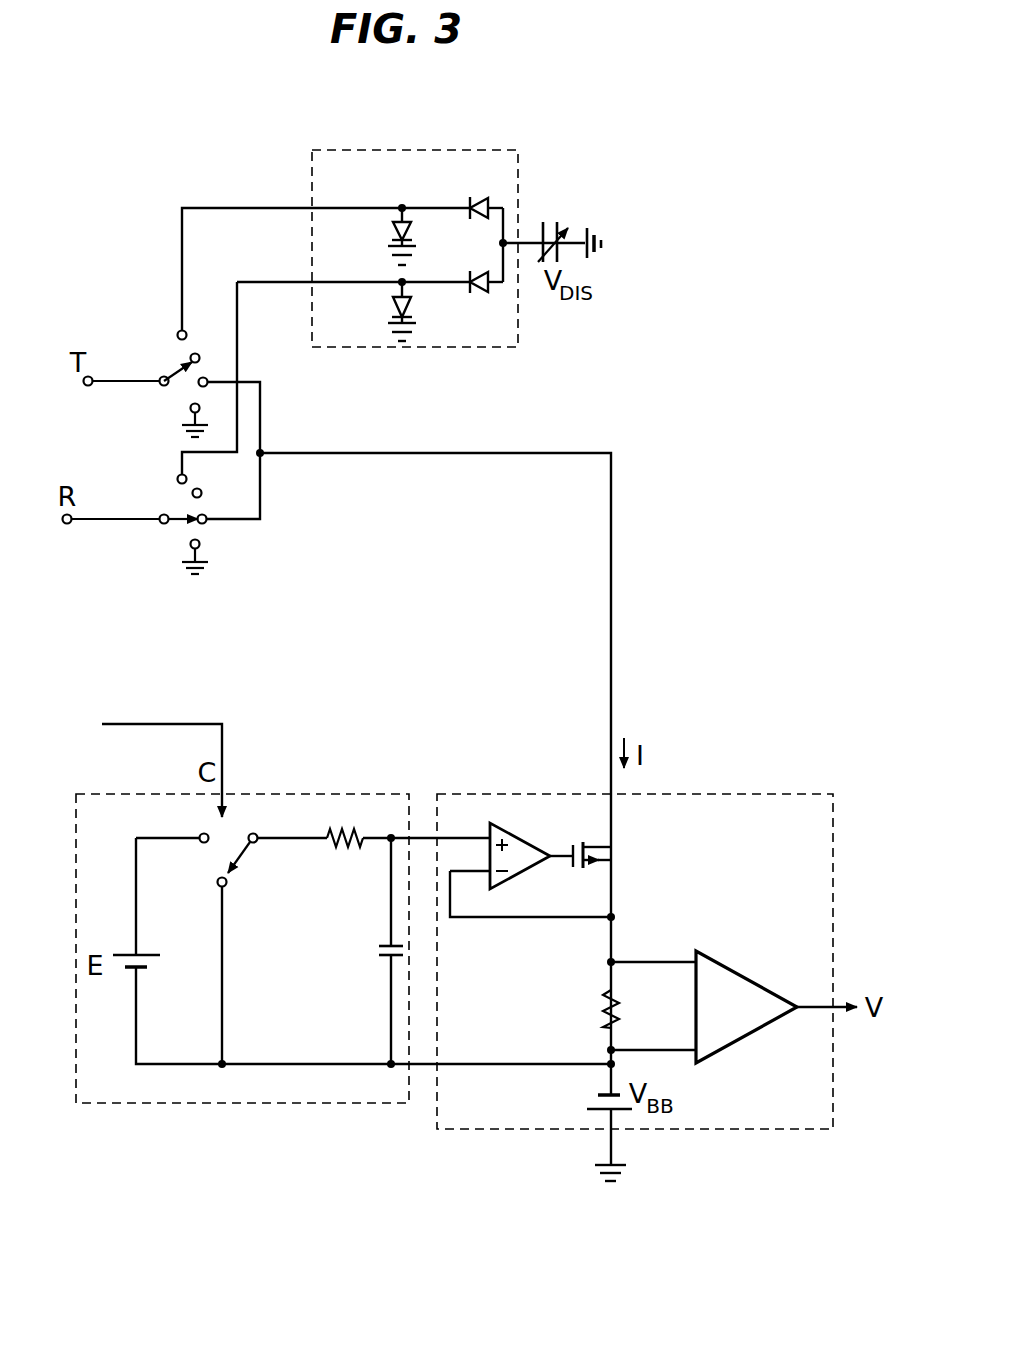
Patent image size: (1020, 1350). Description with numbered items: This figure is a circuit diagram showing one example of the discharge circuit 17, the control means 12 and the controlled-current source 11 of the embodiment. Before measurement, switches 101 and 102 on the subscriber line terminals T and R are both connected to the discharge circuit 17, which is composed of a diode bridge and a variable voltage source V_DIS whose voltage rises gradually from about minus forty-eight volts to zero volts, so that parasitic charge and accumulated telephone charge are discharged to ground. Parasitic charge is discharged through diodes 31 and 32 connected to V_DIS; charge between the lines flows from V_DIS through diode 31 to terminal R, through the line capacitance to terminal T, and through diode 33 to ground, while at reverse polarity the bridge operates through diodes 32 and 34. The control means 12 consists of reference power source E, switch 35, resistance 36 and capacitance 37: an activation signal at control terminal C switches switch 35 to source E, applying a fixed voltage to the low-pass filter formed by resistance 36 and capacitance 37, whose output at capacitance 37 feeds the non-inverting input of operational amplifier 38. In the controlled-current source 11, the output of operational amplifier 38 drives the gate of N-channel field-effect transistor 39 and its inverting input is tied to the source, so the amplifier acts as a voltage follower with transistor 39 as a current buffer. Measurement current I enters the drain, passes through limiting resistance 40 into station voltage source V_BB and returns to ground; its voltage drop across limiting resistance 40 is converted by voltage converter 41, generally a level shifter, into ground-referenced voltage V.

The discharge circuit 17 is at (357, 150).
The diode 32 is at (473, 203).
The diode 31 is at (473, 277).
The diode 33 is at (396, 224).
The diode 34 is at (396, 299).
The switch 101 is at (170, 373).
The switch 102 is at (172, 514).
The control means 12 is at (322, 794).
The switch 35 is at (245, 858).
The resistance 36 is at (336, 843).
The capacitance 37 is at (386, 958).
The controlled-current source 11 is at (710, 794).
The operational amplifier 38 is at (515, 875).
The N-channel field-effect transistor 39 is at (610, 852).
The limiting resistance 40 is at (606, 991).
The voltage converter 41 is at (742, 972).